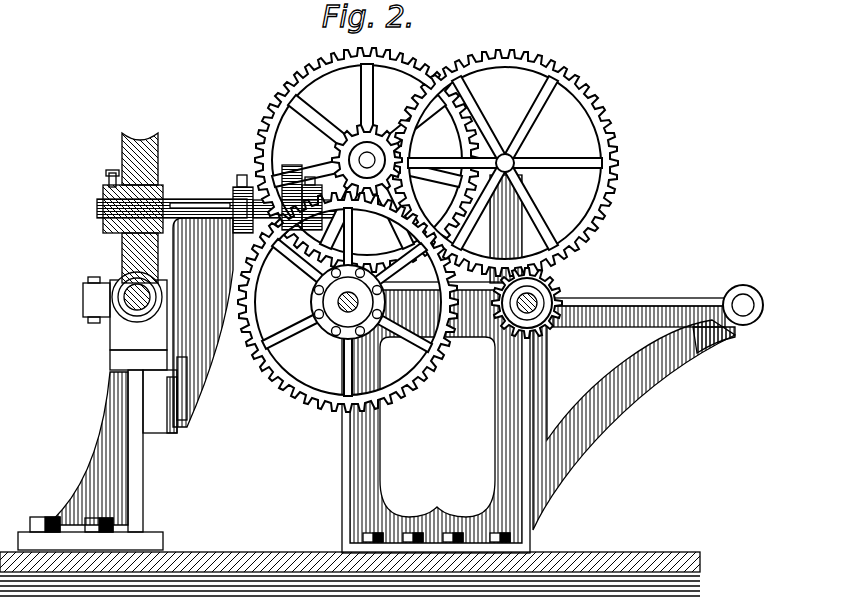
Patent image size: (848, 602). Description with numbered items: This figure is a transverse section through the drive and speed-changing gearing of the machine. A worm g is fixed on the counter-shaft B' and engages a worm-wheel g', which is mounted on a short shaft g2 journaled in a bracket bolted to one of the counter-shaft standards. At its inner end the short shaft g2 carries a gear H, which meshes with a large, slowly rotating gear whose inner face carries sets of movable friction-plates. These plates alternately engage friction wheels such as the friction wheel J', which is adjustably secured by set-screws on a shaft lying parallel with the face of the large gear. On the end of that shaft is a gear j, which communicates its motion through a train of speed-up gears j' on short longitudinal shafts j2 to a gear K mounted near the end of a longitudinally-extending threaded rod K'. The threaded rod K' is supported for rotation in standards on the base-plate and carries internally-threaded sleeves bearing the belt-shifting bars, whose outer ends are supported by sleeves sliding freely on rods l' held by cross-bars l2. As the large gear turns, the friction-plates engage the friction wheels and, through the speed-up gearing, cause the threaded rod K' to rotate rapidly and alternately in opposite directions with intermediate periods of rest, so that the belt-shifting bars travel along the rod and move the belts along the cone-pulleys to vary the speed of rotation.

The worm-wheel g' is at (123, 208).
The short shaft g2 is at (100, 208).
The counter-shaft B' is at (121, 284).
The worm g is at (102, 311).
The gear H is at (291, 166).
The short longitudinal shaft j2 is at (358, 156).
The speed-up gear j' is at (436, 162).
The rod l' is at (516, 299).
The friction wheel J' is at (340, 316).
The gear j is at (334, 302).
The gear K is at (540, 302).
The threaded rod K' is at (548, 323).
The cross-bar l2 is at (642, 303).